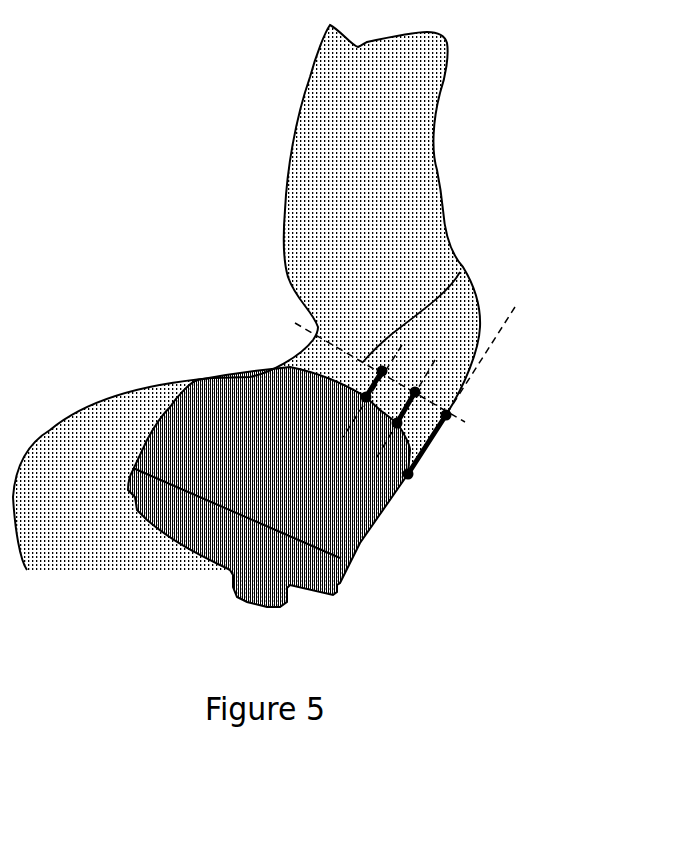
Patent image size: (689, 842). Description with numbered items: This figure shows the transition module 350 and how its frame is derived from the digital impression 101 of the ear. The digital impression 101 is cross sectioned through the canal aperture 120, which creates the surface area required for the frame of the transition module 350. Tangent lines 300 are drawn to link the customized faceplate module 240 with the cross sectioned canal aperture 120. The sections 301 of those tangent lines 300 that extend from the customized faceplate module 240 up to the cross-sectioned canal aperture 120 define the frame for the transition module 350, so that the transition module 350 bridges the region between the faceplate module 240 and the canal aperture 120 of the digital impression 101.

The digital impression 101 is at (370, 170).
The canal aperture 120 is at (460, 272).
The customized faceplate module 240 is at (237, 443).
The tangent lines 300 is at (508, 330).
The sections of the tangent lines 301 is at (428, 447).
The transition module 350 is at (332, 368).